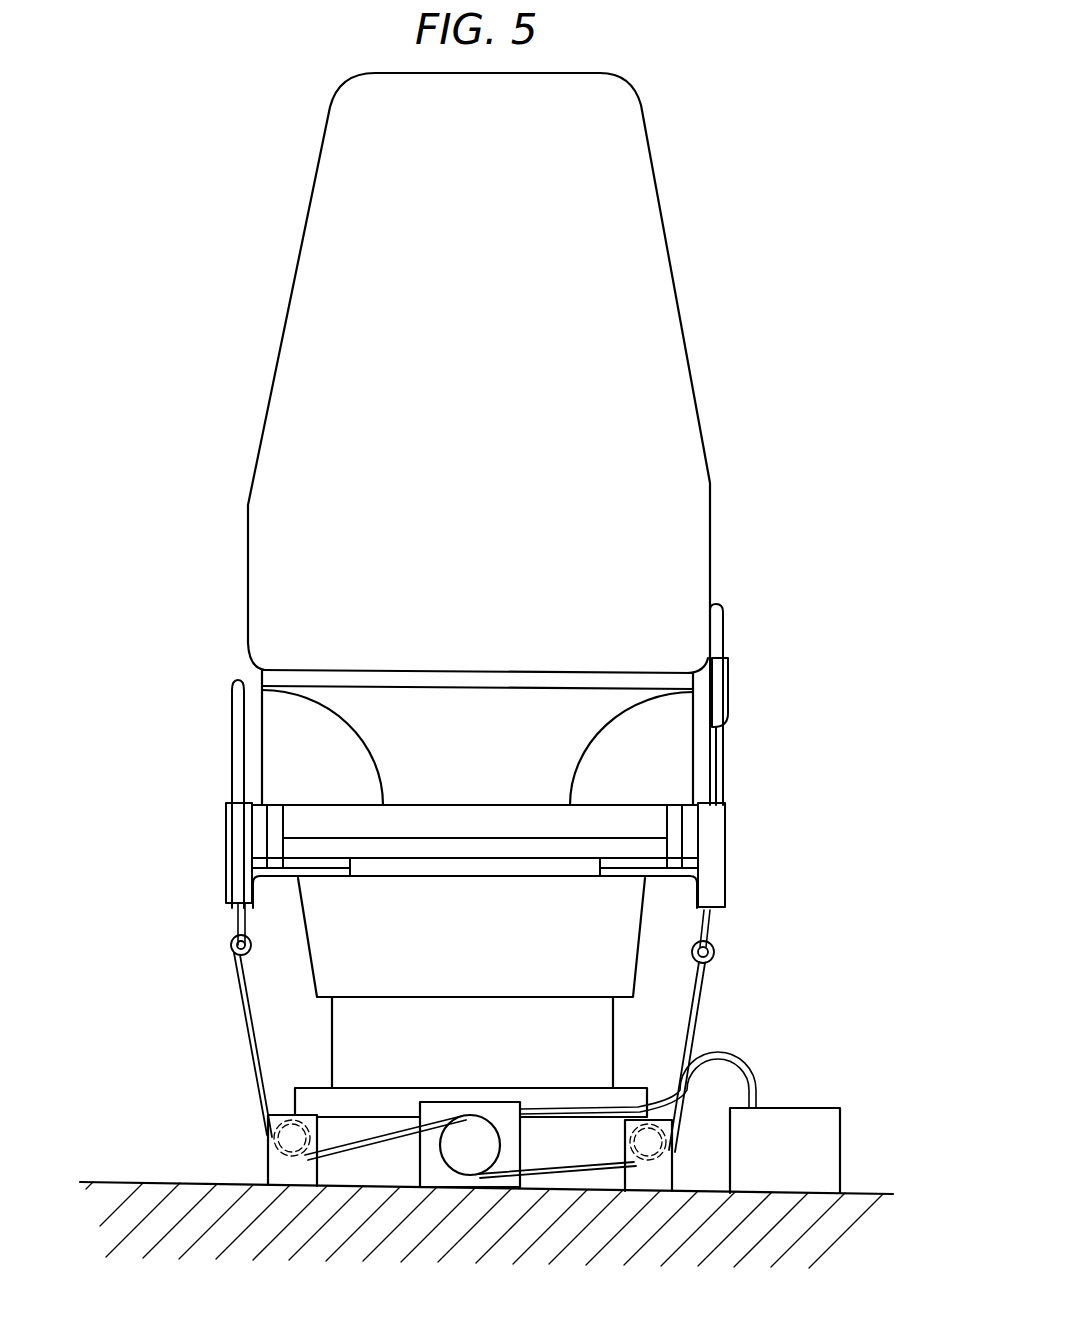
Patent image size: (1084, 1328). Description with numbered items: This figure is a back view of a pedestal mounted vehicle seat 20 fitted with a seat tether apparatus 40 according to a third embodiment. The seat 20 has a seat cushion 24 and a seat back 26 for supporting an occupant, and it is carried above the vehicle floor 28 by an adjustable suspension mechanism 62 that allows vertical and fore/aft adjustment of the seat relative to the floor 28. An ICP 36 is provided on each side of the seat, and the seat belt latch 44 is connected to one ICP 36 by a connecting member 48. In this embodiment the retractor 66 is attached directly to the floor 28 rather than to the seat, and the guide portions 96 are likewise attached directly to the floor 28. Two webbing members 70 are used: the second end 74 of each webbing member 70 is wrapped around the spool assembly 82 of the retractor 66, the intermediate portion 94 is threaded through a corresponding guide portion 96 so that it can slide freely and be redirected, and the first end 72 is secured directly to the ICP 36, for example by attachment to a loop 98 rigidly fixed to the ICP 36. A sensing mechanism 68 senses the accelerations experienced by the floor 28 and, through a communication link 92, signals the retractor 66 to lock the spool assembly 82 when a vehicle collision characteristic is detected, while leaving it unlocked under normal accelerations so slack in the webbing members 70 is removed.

The vehicle seat 20 is at (240, 371).
The seat cushion 24 is at (375, 686).
The seat back 26 is at (308, 205).
The vehicle floor 28 is at (110, 1182).
The ICP 36 is at (226, 843).
The seat tether apparatus 40 is at (824, 950).
The latch 44 is at (730, 685).
The connecting member 48 is at (714, 756).
The adjustable suspension mechanism 62 is at (314, 1036).
The retractor 66 is at (465, 1087).
The sensing mechanism 68 is at (840, 1160).
The webbing member 70 is at (250, 1025).
The first end 72 is at (235, 951).
The second end 74 is at (345, 1147).
The spool assembly 82 is at (486, 1158).
The communication link 92 is at (762, 1076).
The intermediate portion 94 is at (263, 1113).
The guide portion 96 is at (268, 1155).
The loop 98 is at (234, 915).